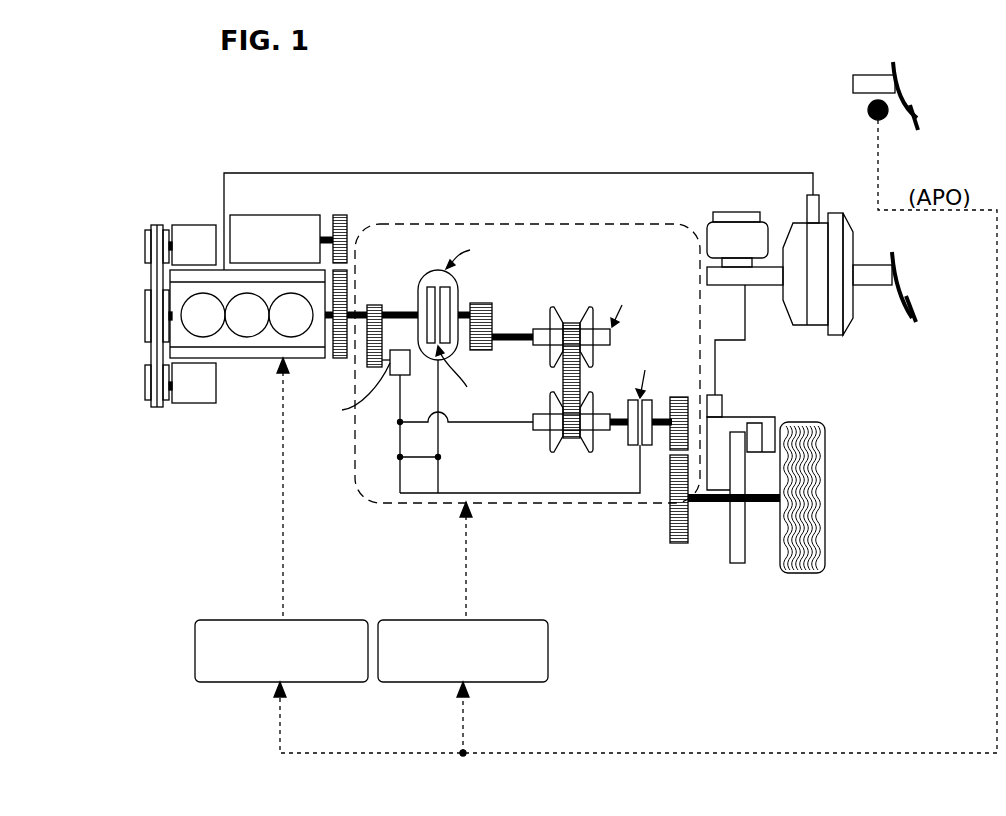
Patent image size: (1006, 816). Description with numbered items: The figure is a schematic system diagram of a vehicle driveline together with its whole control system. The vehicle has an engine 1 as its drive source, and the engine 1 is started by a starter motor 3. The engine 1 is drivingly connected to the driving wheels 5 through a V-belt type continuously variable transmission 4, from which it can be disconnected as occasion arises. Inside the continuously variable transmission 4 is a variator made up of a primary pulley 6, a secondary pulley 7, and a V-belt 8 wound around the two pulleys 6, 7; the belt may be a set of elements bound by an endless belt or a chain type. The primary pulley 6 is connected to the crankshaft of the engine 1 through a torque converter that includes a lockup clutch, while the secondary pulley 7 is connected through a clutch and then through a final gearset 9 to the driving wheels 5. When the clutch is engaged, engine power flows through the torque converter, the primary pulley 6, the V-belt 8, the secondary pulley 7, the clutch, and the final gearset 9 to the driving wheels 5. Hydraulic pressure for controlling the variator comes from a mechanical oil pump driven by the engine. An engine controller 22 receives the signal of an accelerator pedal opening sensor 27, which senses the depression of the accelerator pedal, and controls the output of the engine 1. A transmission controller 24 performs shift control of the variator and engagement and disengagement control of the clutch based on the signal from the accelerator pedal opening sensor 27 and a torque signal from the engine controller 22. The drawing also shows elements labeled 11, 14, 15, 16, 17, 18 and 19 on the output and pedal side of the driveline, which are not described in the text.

The engine 1 is at (247, 366).
The starter motor 3 is at (282, 213).
The V-belt type continuously variable transmission 4 is at (617, 224).
The driving wheels 5 is at (827, 432).
The primary pulley 6 is at (552, 318).
The secondary pulley 7 is at (551, 443).
The V-belt 8 is at (562, 372).
The final gearset 9 is at (670, 446).
The final gear 11 is at (688, 525).
The brake disc 14 is at (745, 550).
The brake caliper 15 is at (767, 417).
The brake pedal 16 is at (917, 306).
The brake booster / master cylinder 17 is at (812, 330).
The brake actuator 18 is at (760, 290).
The accelerator pedal 19 is at (918, 107).
The engine controller 22 is at (348, 618).
The transmission controller 24 is at (531, 618).
The accelerator pedal opening sensor 27 is at (882, 121).